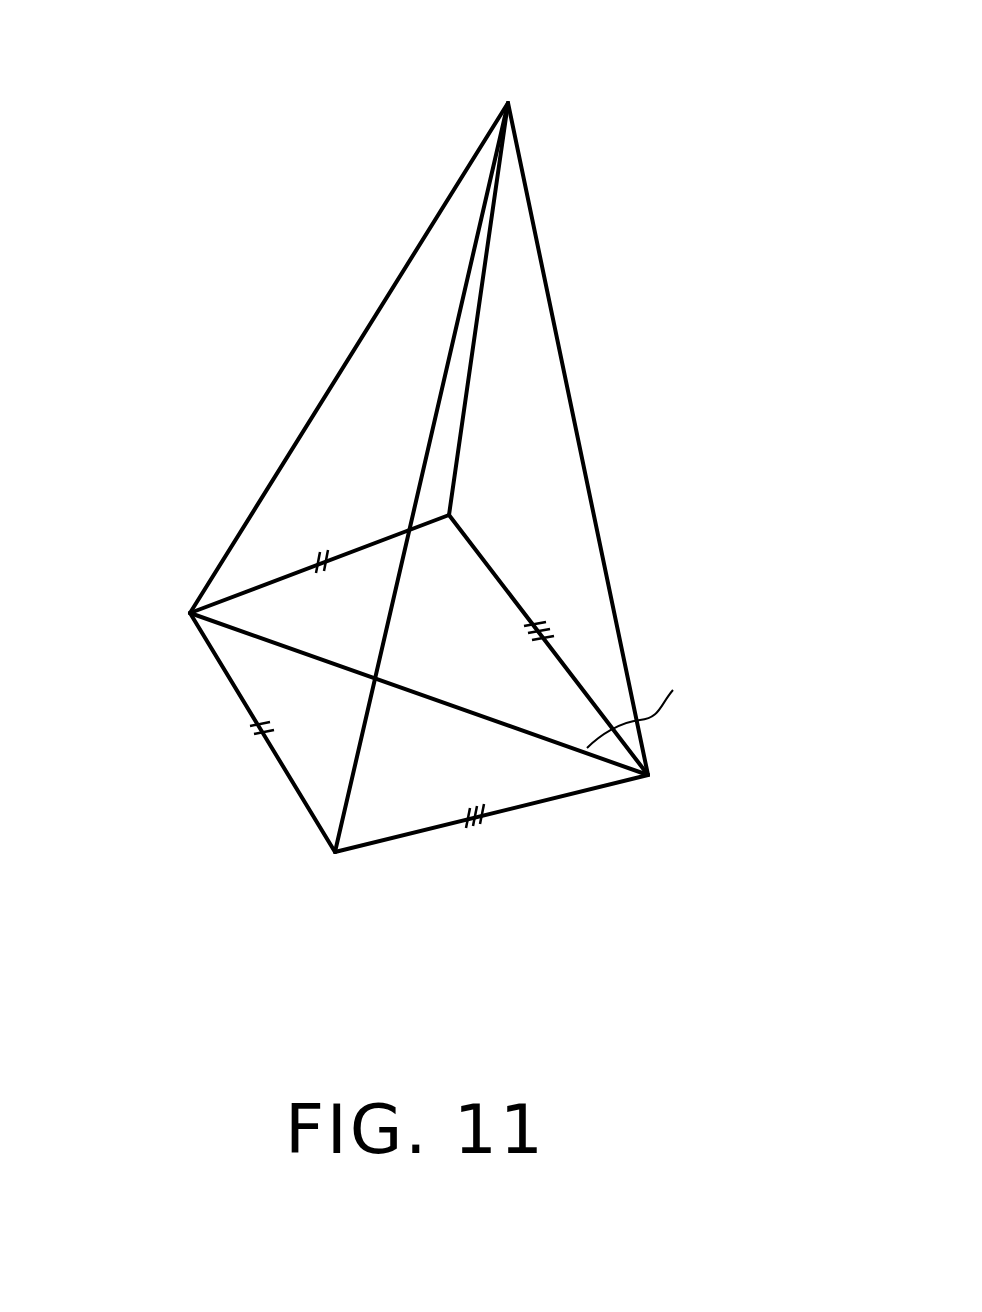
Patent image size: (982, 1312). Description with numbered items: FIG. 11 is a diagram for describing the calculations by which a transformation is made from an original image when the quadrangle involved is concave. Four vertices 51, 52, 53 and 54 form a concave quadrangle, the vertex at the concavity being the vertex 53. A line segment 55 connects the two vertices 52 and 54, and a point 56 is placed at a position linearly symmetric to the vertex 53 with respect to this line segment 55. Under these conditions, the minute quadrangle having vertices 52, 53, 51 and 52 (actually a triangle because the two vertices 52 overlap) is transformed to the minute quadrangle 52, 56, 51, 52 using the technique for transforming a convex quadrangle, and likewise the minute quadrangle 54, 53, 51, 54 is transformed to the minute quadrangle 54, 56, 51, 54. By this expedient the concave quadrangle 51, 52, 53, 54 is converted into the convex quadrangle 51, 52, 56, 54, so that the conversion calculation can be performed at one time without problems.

The vertex 51 is at (508, 103).
The vertex 52 is at (190, 613).
The vertex at the concavity 53 is at (449, 515).
The vertex 54 is at (648, 775).
The line segment 55 is at (649, 696).
The symmetric point 56 is at (335, 852).